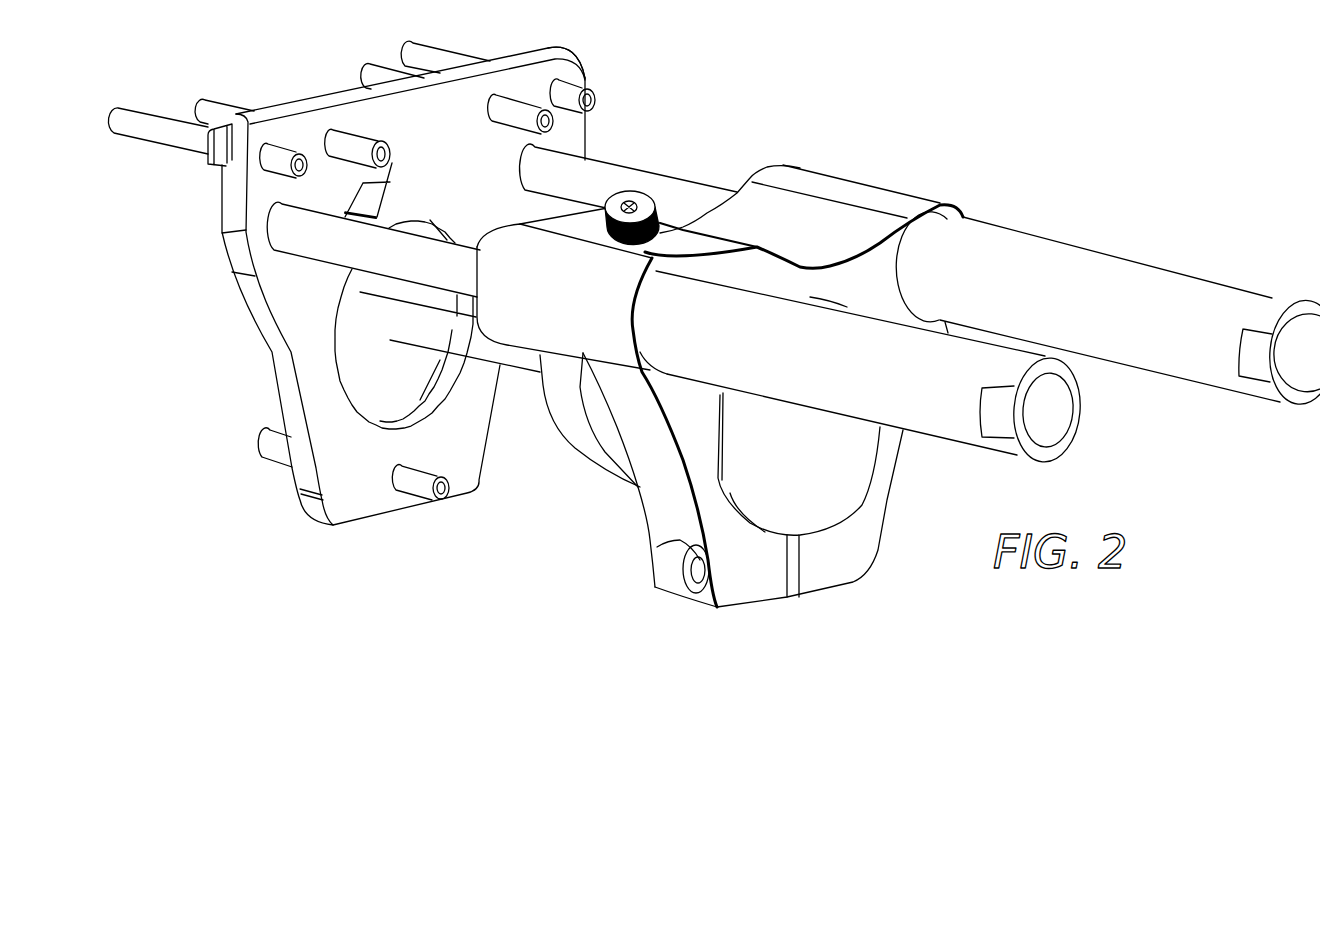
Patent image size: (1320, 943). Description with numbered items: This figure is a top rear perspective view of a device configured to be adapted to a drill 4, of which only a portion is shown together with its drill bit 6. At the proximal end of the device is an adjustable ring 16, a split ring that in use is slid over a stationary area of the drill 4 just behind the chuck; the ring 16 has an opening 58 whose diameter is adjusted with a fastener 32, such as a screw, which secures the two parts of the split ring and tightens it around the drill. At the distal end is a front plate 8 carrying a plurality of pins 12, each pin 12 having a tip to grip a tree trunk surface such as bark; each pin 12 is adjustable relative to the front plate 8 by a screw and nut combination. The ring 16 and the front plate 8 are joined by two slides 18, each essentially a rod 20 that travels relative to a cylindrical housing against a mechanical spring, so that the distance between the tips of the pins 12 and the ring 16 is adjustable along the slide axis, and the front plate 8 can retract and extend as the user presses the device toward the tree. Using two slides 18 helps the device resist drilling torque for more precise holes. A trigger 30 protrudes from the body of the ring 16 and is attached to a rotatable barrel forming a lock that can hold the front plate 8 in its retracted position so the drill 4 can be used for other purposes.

The drill 4 is at (570, 412).
The drill bit 6 is at (363, 312).
The front plate 8 is at (543, 53).
The pins 12 is at (137, 116).
The adjustable ring 16 is at (860, 190).
The slide 18 is at (967, 425).
The rod 20 is at (333, 243).
The trigger 30 is at (638, 186).
The fastener 32 is at (692, 580).
The opening 58 is at (730, 493).